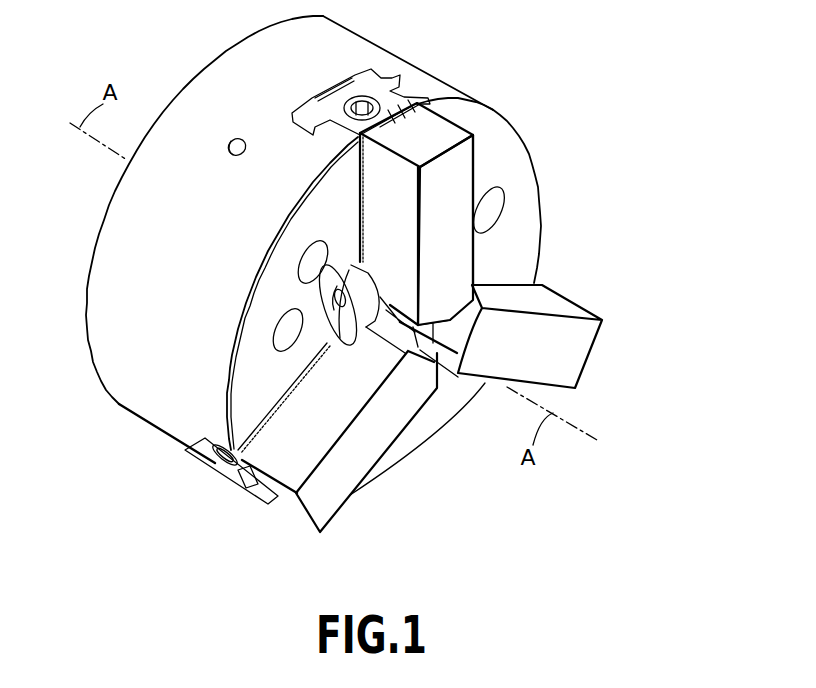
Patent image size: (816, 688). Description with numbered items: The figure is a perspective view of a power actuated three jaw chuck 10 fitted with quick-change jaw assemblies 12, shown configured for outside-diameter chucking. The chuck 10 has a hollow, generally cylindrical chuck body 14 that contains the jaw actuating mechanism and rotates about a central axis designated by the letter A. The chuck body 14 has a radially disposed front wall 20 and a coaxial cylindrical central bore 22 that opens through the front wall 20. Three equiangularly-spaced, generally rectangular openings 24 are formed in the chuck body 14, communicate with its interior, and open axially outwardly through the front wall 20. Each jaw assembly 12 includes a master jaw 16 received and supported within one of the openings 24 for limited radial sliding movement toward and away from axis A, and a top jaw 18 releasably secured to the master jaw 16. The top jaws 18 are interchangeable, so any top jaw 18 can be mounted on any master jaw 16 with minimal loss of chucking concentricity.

The chuck 10 is at (381, 303).
The jaw assembly 12 is at (429, 303).
The chuck body 14 is at (155, 385).
The master jaw 16 is at (373, 87).
The top jaw 18 is at (462, 180).
The front wall 20 is at (263, 337).
The central bore 22 is at (338, 295).
The opening 24 is at (293, 108).